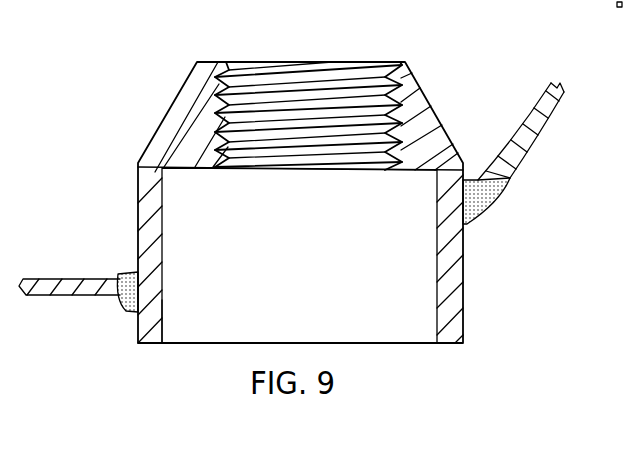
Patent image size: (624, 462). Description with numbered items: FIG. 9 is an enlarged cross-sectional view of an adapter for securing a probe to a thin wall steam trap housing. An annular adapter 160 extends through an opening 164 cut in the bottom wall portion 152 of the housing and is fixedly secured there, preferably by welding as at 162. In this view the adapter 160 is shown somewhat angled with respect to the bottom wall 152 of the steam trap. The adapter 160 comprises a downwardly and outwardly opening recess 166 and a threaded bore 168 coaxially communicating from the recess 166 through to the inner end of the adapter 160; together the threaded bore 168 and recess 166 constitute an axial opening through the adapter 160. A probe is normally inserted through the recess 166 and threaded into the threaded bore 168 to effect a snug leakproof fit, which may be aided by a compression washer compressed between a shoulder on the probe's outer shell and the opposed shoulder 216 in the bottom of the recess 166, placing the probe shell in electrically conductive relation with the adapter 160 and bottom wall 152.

The bottom wall portion 152 is at (66, 296).
The annular adapter 160 is at (465, 267).
The welding 162 is at (476, 212).
The opening 164 is at (128, 272).
The recess 166 is at (163, 313).
The threaded bore 168 is at (240, 88).
The shoulder 216 is at (190, 168).